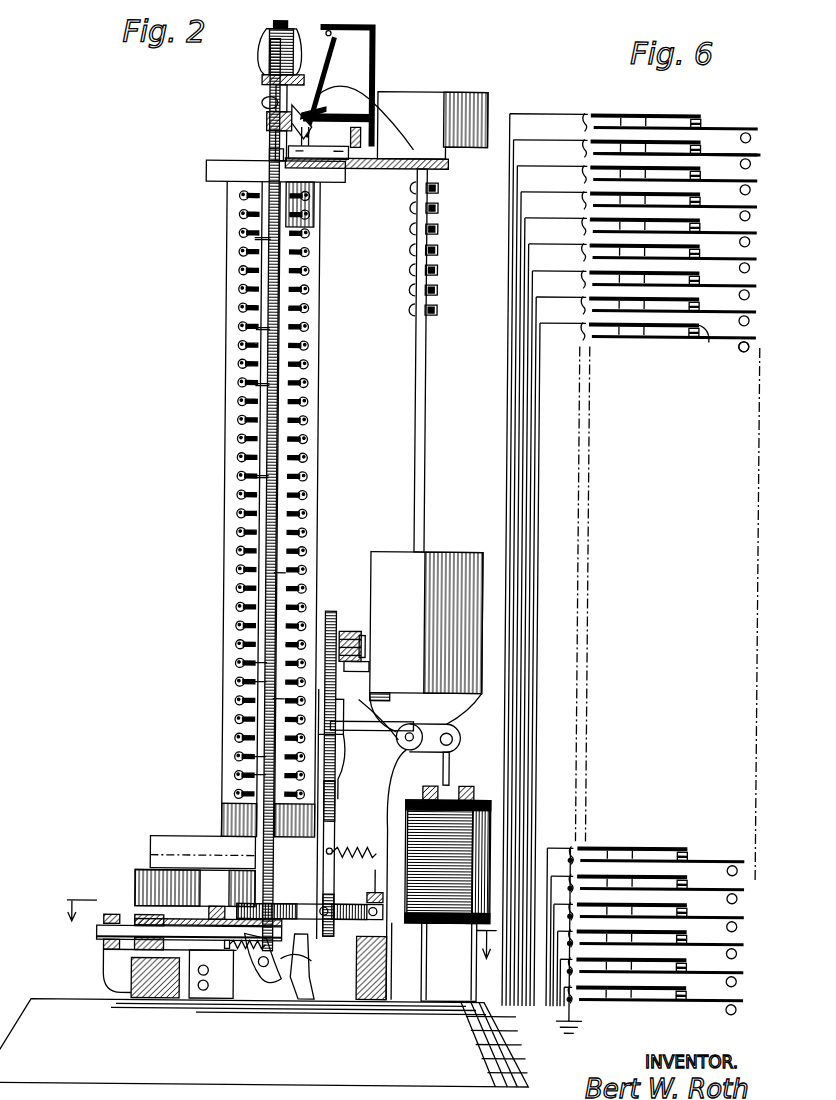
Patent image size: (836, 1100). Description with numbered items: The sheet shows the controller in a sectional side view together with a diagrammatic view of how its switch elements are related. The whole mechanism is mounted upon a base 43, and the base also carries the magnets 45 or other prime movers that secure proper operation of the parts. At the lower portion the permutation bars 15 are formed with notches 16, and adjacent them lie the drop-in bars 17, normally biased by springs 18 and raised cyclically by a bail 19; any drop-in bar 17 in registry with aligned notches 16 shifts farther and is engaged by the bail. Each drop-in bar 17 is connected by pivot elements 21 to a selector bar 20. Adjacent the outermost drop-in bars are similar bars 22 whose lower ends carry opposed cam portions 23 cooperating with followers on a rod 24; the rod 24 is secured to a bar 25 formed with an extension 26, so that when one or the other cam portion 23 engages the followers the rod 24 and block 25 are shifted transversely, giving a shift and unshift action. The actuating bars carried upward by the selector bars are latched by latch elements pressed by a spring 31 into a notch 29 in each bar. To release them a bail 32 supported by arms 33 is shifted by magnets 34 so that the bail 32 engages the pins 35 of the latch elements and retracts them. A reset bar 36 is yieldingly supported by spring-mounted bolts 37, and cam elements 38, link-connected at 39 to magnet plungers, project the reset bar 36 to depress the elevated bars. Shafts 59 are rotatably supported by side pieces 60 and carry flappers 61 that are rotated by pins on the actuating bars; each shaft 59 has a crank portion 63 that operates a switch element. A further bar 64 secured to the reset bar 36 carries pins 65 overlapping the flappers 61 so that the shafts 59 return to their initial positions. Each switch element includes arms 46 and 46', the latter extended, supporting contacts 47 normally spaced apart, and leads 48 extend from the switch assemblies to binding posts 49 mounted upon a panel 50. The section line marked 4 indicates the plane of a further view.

In FIG. 2, the section line 4- 4 is at (279, 941).
In FIG. 2, the permutation bars 15 is at (362, 638).
In FIG. 2, the notches 16 is at (343, 632).
In FIG. 2, the drop-in bars 17 is at (333, 613).
In FIG. 2, the springs 18 is at (352, 857).
In FIG. 2, the bail 19 is at (362, 740).
In FIG. 2, the selector bars 20 is at (382, 895).
In FIG. 2, the pivot elements 21 is at (313, 882).
In FIG. 2, the bars 22 is at (322, 860).
In FIG. 2, the cam portions 23 is at (320, 985).
In FIG. 2, the rod 24 is at (305, 990).
In FIG. 2, the bar 25 is at (280, 985).
In FIG. 2, the extension 26 is at (202, 922).
In FIG. 2, the notch 29 is at (270, 153).
In FIG. 2, the spring 31 is at (355, 168).
In FIG. 2, the bail 32 is at (333, 120).
In FIG. 2, the arms 33 is at (333, 48).
In FIG. 2, the magnets 34 is at (447, 100).
In FIG. 2, the pins 35 is at (333, 133).
In FIG. 2, the reset bar 36 is at (262, 122).
In FIG. 2, the spring-mounted bolts 37 is at (263, 47).
In FIG. 2, the cam elements 38 is at (260, 103).
In FIG. 2, the link 39 is at (300, 110).
In FIG. 2, the base 43 is at (264, 1042).
In FIG. 2, the magnets 45 is at (426, 642).
In FIG. 6, the arm 46 is at (663, 550).
In FIG. 6, the arm 46' is at (677, 126).
In FIG. 6, the contacts 47 is at (707, 337).
In FIG. 6, the leads 48 is at (535, 622).
In FIG. 2, the binding posts 49 is at (436, 310).
In FIG. 2, the panel 50 is at (426, 423).
In FIG. 2, the shafts 59 is at (238, 195).
In FIG. 2, the side pieces 60 is at (320, 213).
In FIG. 2, the flappers 61 is at (248, 217).
In FIG. 6, the crank portion 63 is at (744, 351).
In FIG. 2, the bar 64 is at (280, 267).
In FIG. 2, the pins 65 is at (252, 242).